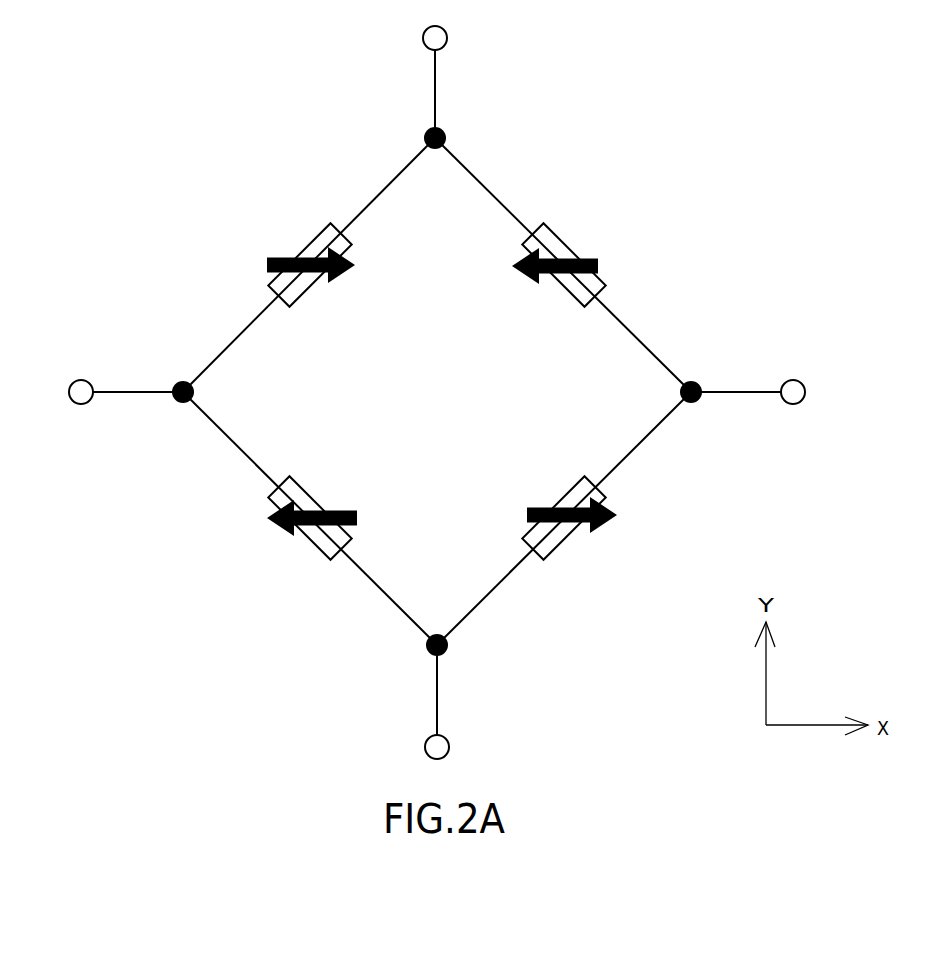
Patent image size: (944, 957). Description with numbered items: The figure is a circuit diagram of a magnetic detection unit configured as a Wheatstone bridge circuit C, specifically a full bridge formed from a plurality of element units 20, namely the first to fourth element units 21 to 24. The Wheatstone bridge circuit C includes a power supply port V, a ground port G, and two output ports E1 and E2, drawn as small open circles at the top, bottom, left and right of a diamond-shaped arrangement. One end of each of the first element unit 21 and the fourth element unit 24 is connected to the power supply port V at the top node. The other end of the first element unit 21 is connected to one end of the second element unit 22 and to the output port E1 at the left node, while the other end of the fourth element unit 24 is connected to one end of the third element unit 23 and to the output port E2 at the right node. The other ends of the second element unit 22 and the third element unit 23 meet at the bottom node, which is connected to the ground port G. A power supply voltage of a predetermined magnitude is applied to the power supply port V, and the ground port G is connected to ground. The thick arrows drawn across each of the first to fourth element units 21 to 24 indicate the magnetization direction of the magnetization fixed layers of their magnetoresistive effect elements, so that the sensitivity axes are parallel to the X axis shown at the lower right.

The element unit 20 is at (446, 398).
The first element unit 21 is at (312, 235).
The second element unit 22 is at (315, 543).
The third element unit 23 is at (562, 543).
The fourth element unit 24 is at (565, 243).
The Wheatstone bridge circuit C is at (595, 182).
The power supply port V is at (444, 31).
The ground port G is at (446, 755).
The output port E1 is at (77, 379).
The output port E2 is at (802, 379).